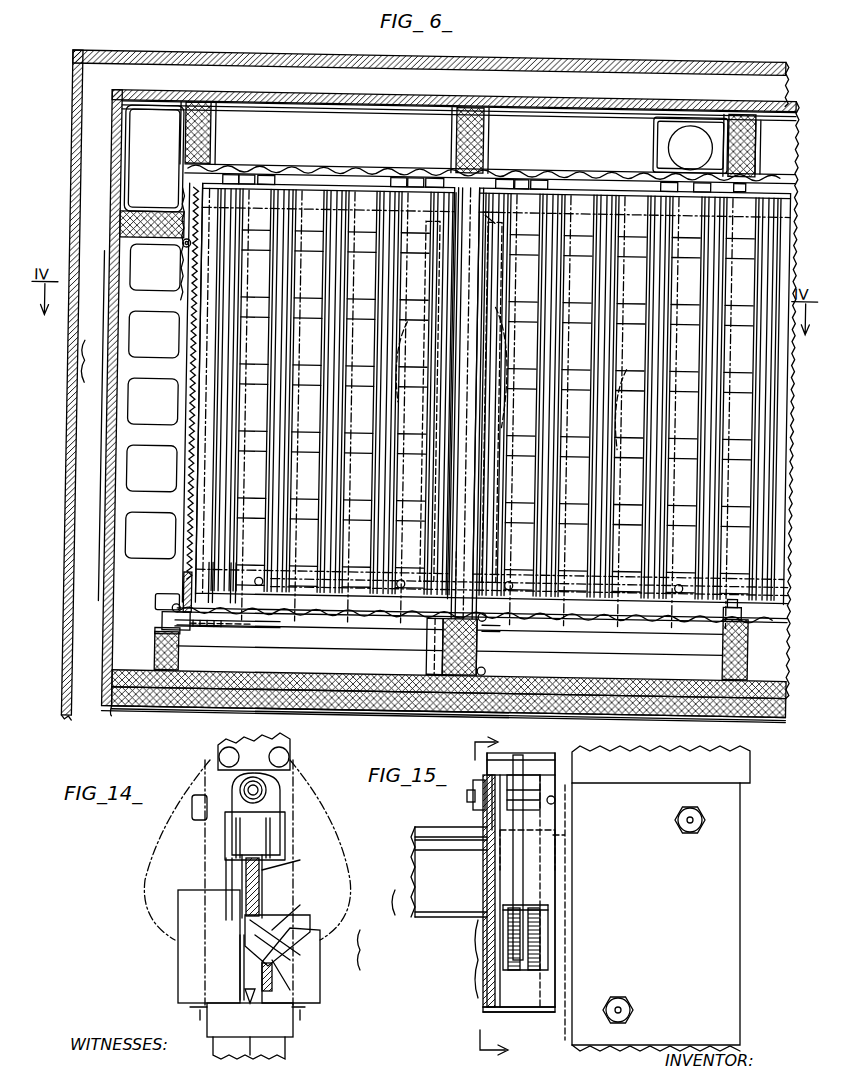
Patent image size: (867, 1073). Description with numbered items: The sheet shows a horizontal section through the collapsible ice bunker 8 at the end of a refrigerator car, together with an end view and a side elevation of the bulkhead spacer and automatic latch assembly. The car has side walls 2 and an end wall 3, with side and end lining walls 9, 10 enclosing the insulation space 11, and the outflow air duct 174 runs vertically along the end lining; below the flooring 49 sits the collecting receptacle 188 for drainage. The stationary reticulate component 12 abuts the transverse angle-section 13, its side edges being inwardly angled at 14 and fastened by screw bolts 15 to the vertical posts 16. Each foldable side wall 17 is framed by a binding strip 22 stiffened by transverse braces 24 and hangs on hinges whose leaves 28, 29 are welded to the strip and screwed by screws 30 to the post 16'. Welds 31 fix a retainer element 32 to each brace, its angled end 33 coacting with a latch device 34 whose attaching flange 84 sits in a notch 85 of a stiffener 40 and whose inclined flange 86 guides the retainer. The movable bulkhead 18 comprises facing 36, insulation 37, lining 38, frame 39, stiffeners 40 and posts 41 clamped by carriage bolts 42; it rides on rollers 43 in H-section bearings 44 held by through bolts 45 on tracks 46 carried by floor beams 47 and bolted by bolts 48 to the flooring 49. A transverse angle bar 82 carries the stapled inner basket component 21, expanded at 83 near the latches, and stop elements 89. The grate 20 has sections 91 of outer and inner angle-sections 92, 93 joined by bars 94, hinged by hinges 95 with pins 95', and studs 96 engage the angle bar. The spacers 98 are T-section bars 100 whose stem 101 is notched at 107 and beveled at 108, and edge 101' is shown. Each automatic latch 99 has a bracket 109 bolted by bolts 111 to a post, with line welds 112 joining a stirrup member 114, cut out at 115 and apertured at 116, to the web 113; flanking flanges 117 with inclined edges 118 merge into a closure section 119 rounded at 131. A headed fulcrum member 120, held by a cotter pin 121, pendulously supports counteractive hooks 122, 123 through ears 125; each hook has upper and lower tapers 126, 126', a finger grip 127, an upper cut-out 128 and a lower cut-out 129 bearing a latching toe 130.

In FIG. 6, the side walls 2 is at (73, 455).
In FIG. 6, the end wall 3 is at (560, 52).
In FIG. 6, the collapsible bunker 8 is at (80, 361).
In FIG. 6, the side lining wall 9 is at (108, 412).
In FIG. 6, the end lining wall 10 is at (436, 90).
In FIG. 6, the insulation space 11 is at (632, 89).
In FIG. 6, the stationary end wall or reticulate component 12 is at (588, 154).
In FIG. 6, the transverse angle-section 13 is at (358, 222).
In FIG. 6, the inwardly angled side edges 14 is at (180, 176).
In FIG. 6, the screw bolts 15 is at (182, 160).
In FIG. 6, the vertical posts 16 is at (484, 140).
In FIG. 6, the vertical post 16' is at (133, 224).
In FIG. 6, the side walls 17 is at (184, 333).
In FIG. 6, the movable bulkhead 18 is at (386, 710).
In FIG. 6, the ice grate 20 is at (273, 394).
In FIG. 6, the inner basket component 21 is at (575, 612).
In FIG. 6, the binding strip 22 is at (206, 264).
In FIG. 6, the transverse braces 24 is at (206, 283).
In FIG. 6, the hinge leaf 28 is at (183, 263).
In FIG. 6, the hinge leaf 29 is at (182, 214).
In FIG. 6, the screws 30 is at (196, 242).
In FIG. 6, the welds 31 is at (214, 571).
In FIG. 6, the retainer element 32 is at (239, 571).
In FIG. 6, the outwardly angled free end 33 is at (210, 628).
In FIG. 6, the latch device 34 is at (206, 637).
In FIG. 6, the tongue-and-groove facing 36 is at (330, 707).
In FIG. 6, the insulation 37 is at (330, 672).
In FIG. 6, the tongue-and-groove lining 38 is at (368, 686).
In FIG. 6, the frame 39 is at (128, 708).
In FIG. 6, the vertical stiffeners 40 is at (165, 656).
In FIG. 6, the posts 41 is at (498, 662).
In FIG. 14, the posts 41 is at (287, 1055).
In FIG. 15, the posts 41 is at (740, 780).
In FIG. 6, the carriage bolts 42 is at (158, 592).
In FIG. 6, the rollers 43 is at (437, 654).
In FIG. 6, the H-section bearings 44 is at (437, 632).
In FIG. 6, the through bolts 45 is at (499, 647).
In FIG. 6, the tracks 46 is at (442, 290).
In FIG. 6, the floor beams 47 is at (486, 214).
In FIG. 6, the bolts 48 is at (504, 400).
In FIG. 6, the car flooring 49 is at (517, 386).
In FIG. 6, the transverse angle bar 82 is at (530, 568).
In FIG. 6, the expanded portion 83 is at (240, 644).
In FIG. 6, the attaching flange 84 is at (156, 630).
In FIG. 6, the notch 85 is at (172, 636).
In FIG. 6, the flange 86 is at (193, 580).
In FIG. 6, the outwardly projecting elements 89 is at (466, 540).
In FIG. 6, the grate sections 91 is at (341, 162).
In FIG. 6, the outer angle-section 92 is at (384, 180).
In FIG. 6, the inner angle-section 93 is at (520, 394).
In FIG. 6, the spaced bars 94 is at (378, 333).
In FIG. 6, the hinges 95 is at (474, 180).
In FIG. 6, the hinge pins 95' is at (485, 167).
In FIG. 6, the pins or studs 96 is at (473, 562).
In FIG. 15, the spacers 98 is at (385, 902).
In FIG. 14, the automatic latches 99 is at (369, 950).
In FIG. 15, the automatic latches 99 is at (470, 891).
In FIG. 15, the T-section bar 100 is at (415, 865).
In FIG. 14, the stem 101 is at (235, 886).
In FIG. 15, the stem 101 is at (432, 887).
In FIG. 15, the slat edge 101' is at (429, 831).
In FIG. 15, the notch 107 is at (470, 852).
In FIG. 14, the bevel 108 is at (225, 845).
In FIG. 15, the bevel 108 is at (565, 840).
In FIG. 14, the channel-section bracket 109 is at (207, 1027).
In FIG. 15, the channel-section bracket 109 is at (740, 898).
In FIG. 14, the bolts 111 is at (192, 818).
In FIG. 15, the bolts 111 is at (690, 835).
In FIG. 15, the line welds 112 is at (555, 942).
In FIG. 15, the web portion 113 is at (555, 898).
In FIG. 15, the stirrup member 114 is at (530, 1012).
In FIG. 15, the transverse cut-out 115 is at (555, 772).
In FIG. 14, the rectangular apertures 116 is at (240, 968).
In FIG. 15, the rectangular apertures 116 is at (548, 968).
In FIG. 14, the flanking flanges 117 is at (178, 990).
In FIG. 15, the flanking flanges 117 is at (483, 1000).
In FIG. 14, the inclined upper edges 118 is at (226, 880).
In FIG. 15, the inclined upper edges 118 is at (483, 895).
In FIG. 14, the closure section 119 is at (270, 795).
In FIG. 15, the closure section 119 is at (488, 822).
In FIG. 14, the headed fulcrum member 120 is at (282, 782).
In FIG. 15, the headed fulcrum member 120 is at (473, 800).
In FIG. 15, the cotter pin 121 is at (556, 800).
In FIG. 14, the latch hook 122 is at (290, 870).
In FIG. 15, the latch hook 122 is at (513, 878).
In FIG. 14, the latch hook 123 is at (180, 862).
In FIG. 15, the latch hook 123 is at (555, 878).
In FIG. 14, the ears 125 is at (220, 757).
In FIG. 15, the ears 125 is at (540, 815).
In FIG. 14, the upper taper end 126 is at (311, 971).
In FIG. 15, the upper taper end 126 is at (483, 896).
In FIG. 15, the lower taper end 126' is at (529, 953).
In FIG. 14, the cross arm or finger grip 127 is at (252, 735).
In FIG. 15, the cross arm or finger grip 127 is at (548, 753).
In FIG. 14, the upper rectangular cut-out 128 is at (236, 835).
In FIG. 14, the lower cut-out 129 is at (298, 894).
In FIG. 14, the latching toe 130 is at (245, 916).
In FIG. 15, the latching toe 130 is at (548, 918).
In FIG. 14, the rounded portions 131 is at (250, 1022).
In FIG. 6, the outflow air duct 174 is at (690, 145).
In FIG. 6, the collecting receptacle 188 is at (298, 100).